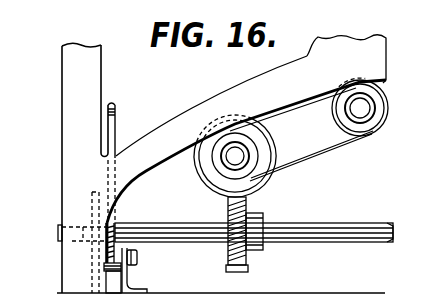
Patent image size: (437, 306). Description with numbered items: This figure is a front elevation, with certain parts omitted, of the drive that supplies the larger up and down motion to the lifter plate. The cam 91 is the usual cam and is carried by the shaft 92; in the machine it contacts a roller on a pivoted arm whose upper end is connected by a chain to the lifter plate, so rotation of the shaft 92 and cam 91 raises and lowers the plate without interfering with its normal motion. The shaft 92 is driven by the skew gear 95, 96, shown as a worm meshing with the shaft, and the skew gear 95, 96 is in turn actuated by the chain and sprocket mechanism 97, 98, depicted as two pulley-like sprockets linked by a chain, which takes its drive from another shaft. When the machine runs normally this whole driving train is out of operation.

The cam 91 is at (97, 256).
The shaft 92 is at (138, 232).
The skew gear 95 is at (228, 205).
The skew gear 96 is at (208, 172).
The chain and sprocket mechanism 97 is at (373, 122).
The chain and sprocket mechanism 98 is at (253, 162).